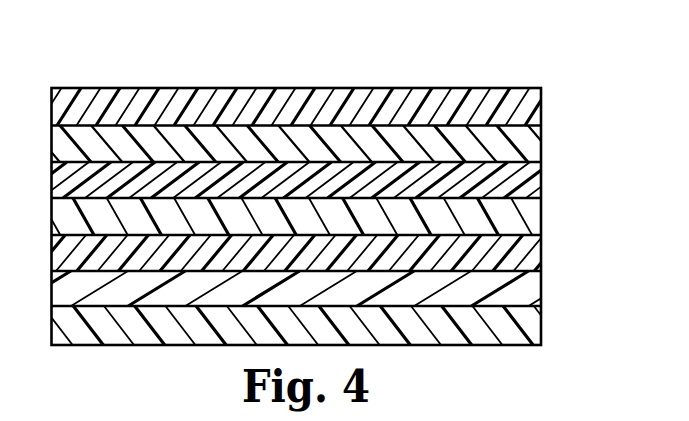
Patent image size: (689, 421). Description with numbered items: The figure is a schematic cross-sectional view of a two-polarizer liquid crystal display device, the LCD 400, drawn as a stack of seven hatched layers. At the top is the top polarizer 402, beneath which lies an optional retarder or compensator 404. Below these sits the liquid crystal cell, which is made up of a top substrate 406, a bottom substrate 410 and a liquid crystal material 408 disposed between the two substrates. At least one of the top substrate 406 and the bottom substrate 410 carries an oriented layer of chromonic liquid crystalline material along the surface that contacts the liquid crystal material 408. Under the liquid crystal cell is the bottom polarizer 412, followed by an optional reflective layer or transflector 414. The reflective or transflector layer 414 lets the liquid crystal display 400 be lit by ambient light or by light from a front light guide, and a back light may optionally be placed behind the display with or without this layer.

The liquid crystal display 400 is at (490, 69).
The top polarizer 402 is at (530, 107).
The retarder or compensator 404 is at (527, 138).
The top substrate 406 is at (513, 177).
The liquid crystal material 408 is at (510, 215).
The bottom substrate 410 is at (520, 250).
The bottom polarizer 412 is at (525, 290).
The reflective layer or transflector 414 is at (507, 325).